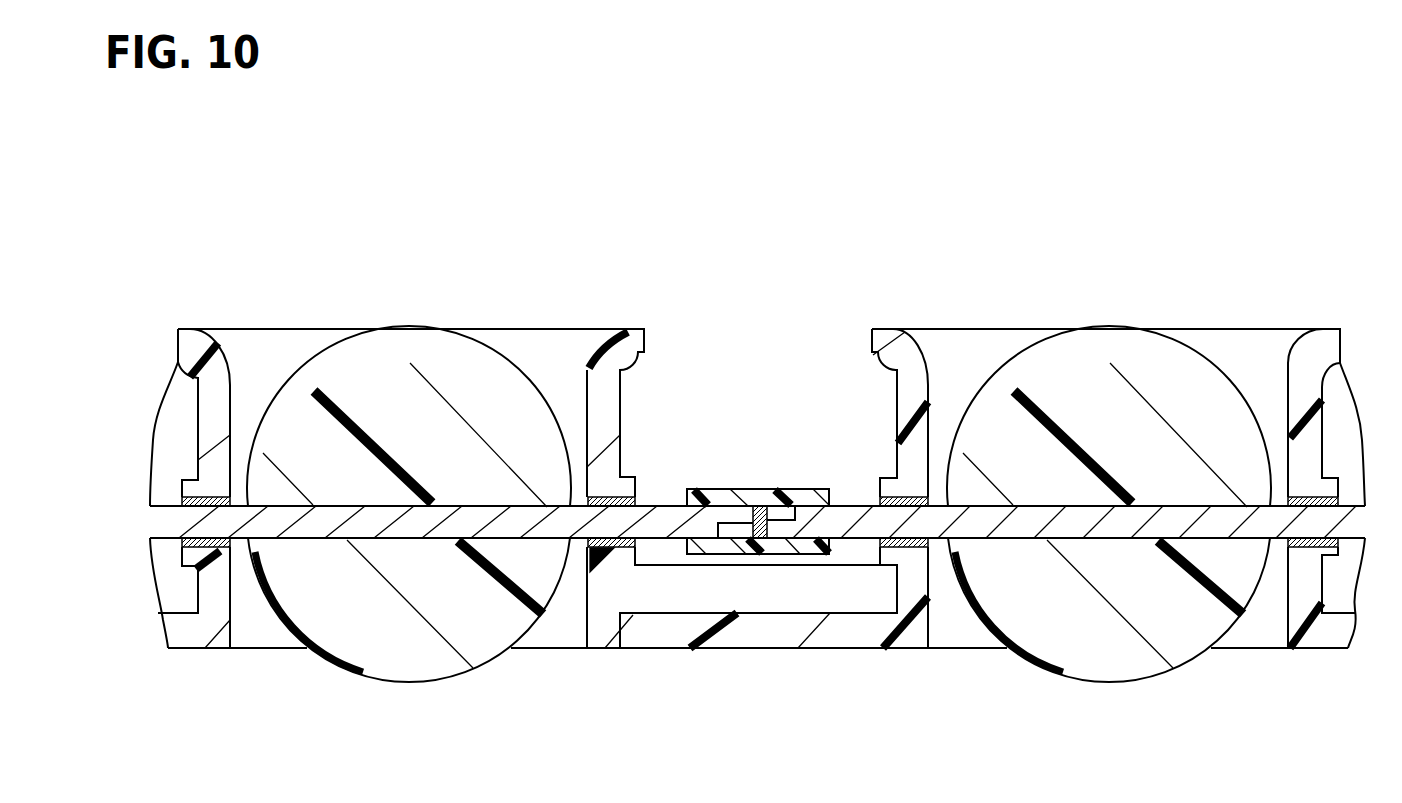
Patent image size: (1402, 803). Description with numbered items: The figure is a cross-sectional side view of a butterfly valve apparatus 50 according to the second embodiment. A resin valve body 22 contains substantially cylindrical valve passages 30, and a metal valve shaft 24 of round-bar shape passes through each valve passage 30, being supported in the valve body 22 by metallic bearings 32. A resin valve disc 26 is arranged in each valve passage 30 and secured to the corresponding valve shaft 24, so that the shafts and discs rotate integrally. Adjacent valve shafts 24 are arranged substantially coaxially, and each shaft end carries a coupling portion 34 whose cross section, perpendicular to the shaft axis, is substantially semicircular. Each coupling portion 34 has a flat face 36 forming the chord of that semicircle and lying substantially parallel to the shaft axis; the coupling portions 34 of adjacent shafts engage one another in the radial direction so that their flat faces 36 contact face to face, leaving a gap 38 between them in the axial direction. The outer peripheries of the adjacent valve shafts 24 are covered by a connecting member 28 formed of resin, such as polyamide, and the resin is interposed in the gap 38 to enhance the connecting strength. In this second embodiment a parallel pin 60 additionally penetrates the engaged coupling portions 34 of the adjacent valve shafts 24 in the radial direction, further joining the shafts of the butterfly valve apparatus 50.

The valve body 22 is at (638, 350).
The valve shaft 24 is at (513, 518).
The valve disc 26 is at (437, 380).
The connecting member 28 is at (820, 553).
The valve passage 30 is at (280, 365).
The bearing 32 is at (222, 548).
The coupling portion 34 is at (738, 510).
The flat face 36 is at (782, 522).
The gap 38 is at (797, 520).
The butterfly valve apparatus 50 is at (223, 312).
The parallel pin 60 is at (758, 513).